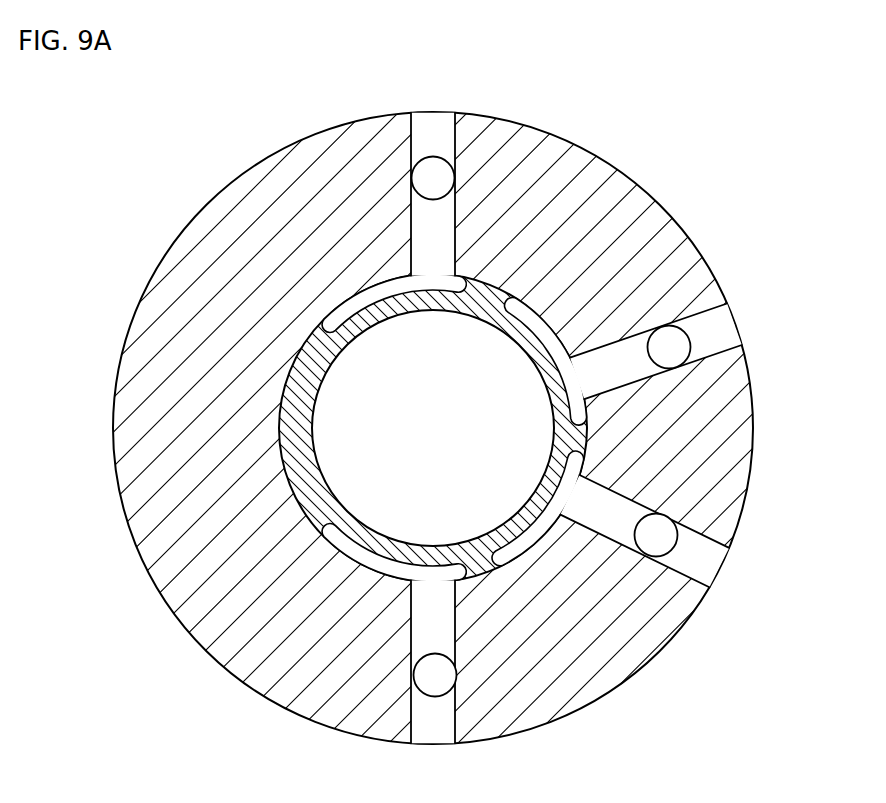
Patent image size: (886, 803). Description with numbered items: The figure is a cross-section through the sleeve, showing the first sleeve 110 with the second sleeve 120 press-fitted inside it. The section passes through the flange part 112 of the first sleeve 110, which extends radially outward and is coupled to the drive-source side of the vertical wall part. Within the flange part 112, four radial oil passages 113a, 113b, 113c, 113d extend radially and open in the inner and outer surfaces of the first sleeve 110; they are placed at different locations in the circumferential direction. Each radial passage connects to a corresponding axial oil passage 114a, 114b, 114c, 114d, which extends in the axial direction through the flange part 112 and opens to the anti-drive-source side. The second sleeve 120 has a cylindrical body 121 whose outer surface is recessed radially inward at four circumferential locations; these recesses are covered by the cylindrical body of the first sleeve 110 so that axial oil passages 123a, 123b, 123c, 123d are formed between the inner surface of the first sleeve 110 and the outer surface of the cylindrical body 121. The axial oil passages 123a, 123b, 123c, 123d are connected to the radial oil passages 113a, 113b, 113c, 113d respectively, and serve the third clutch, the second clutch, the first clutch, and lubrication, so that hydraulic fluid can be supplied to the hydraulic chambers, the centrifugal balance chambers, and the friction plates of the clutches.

The first sleeve 110 is at (607, 158).
The flange part 112 is at (256, 182).
The radial oil passage 113a is at (411, 148).
The radial oil passage 113b is at (682, 310).
The radial oil passage 113c is at (687, 511).
The radial oil passage 113d is at (470, 700).
The axial oil passage 114a is at (445, 165).
The axial oil passage 114b is at (693, 325).
The axial oil passage 114c is at (670, 552).
The axial oil passage 114d is at (430, 700).
The second sleeve 120 is at (320, 453).
The cylindrical body 121 is at (330, 498).
The axial oil passage 123a is at (405, 300).
The axial oil passage 123b is at (548, 360).
The axial oil passage 123c is at (523, 523).
The axial oil passage 123d is at (392, 553).